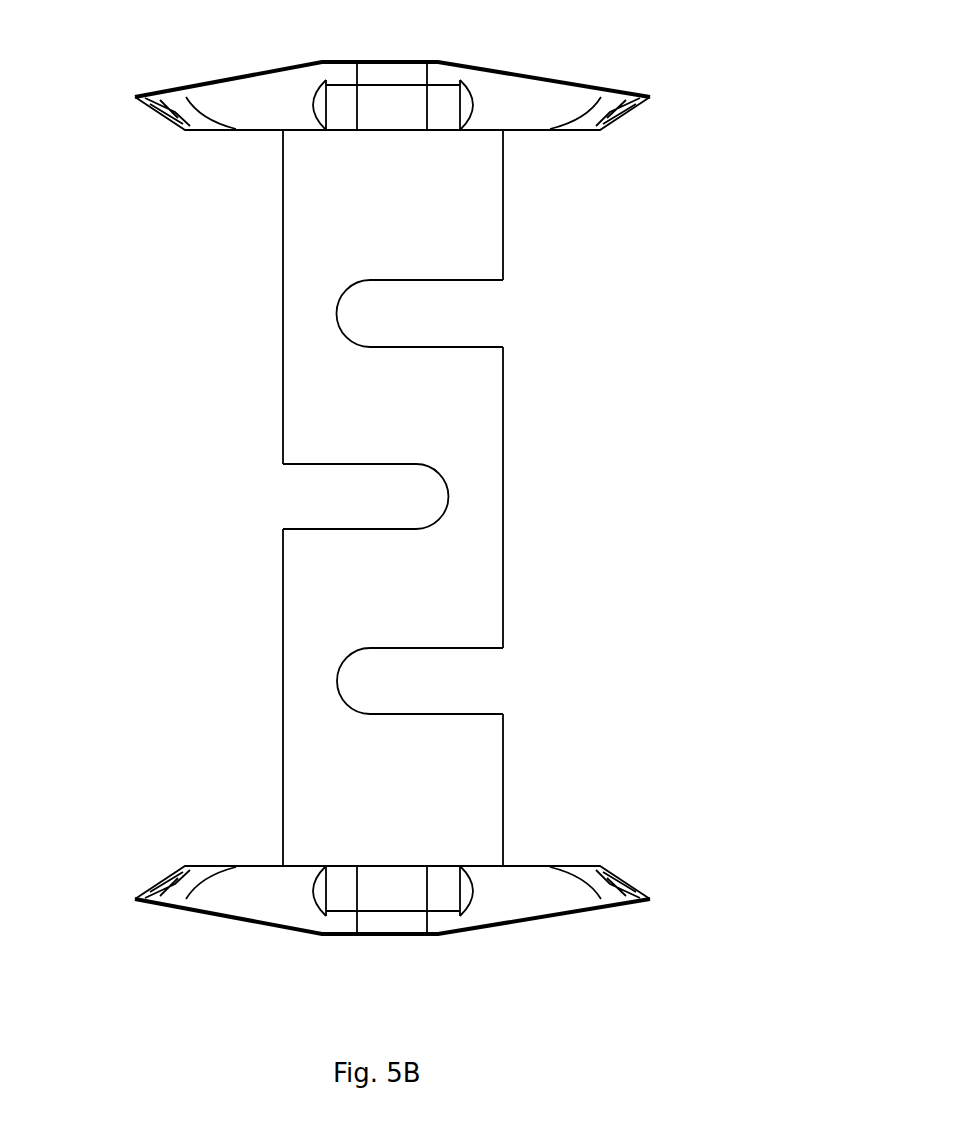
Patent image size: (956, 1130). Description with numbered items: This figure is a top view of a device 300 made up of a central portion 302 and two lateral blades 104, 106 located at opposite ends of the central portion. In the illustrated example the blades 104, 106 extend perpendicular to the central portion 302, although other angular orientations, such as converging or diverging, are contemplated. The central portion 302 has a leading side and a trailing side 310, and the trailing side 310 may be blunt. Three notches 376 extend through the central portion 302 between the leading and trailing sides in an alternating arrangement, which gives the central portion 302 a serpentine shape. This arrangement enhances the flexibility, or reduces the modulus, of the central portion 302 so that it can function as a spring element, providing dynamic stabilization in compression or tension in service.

The device 300 is at (116, 493).
The lateral blade 106 is at (551, 80).
The lateral blade 104 is at (232, 918).
The central portion 302 is at (283, 565).
The trailing side 310 is at (315, 615).
The notch 376 is at (478, 313).